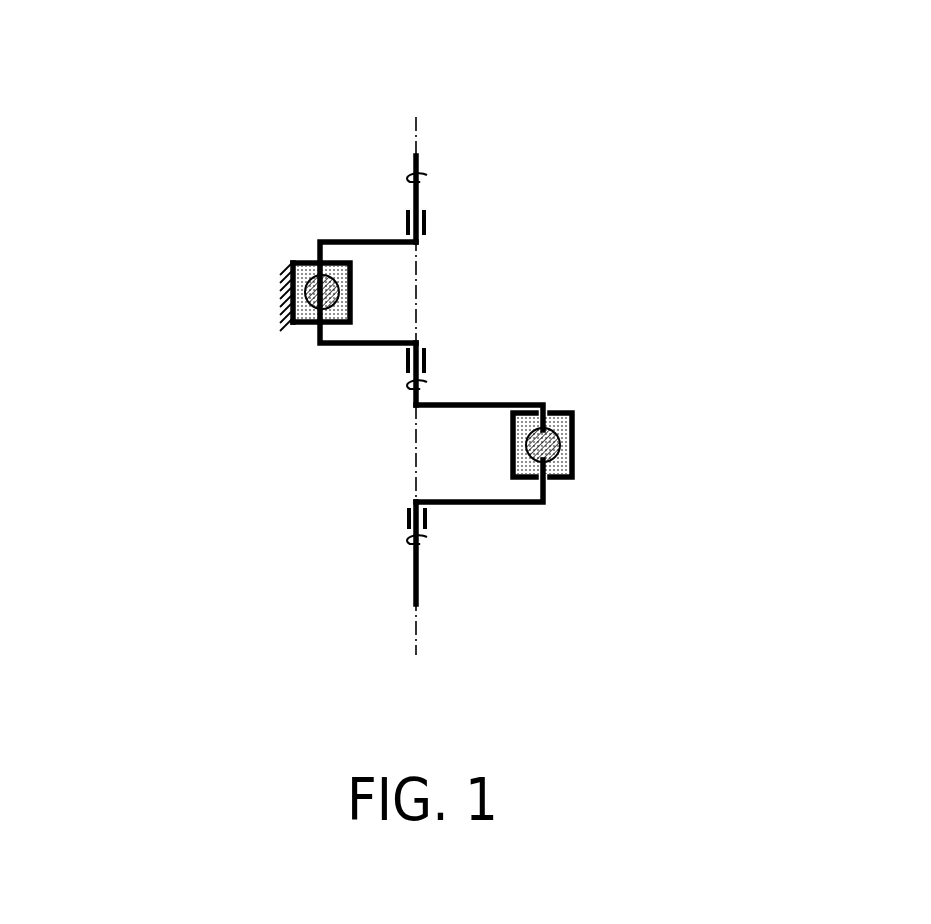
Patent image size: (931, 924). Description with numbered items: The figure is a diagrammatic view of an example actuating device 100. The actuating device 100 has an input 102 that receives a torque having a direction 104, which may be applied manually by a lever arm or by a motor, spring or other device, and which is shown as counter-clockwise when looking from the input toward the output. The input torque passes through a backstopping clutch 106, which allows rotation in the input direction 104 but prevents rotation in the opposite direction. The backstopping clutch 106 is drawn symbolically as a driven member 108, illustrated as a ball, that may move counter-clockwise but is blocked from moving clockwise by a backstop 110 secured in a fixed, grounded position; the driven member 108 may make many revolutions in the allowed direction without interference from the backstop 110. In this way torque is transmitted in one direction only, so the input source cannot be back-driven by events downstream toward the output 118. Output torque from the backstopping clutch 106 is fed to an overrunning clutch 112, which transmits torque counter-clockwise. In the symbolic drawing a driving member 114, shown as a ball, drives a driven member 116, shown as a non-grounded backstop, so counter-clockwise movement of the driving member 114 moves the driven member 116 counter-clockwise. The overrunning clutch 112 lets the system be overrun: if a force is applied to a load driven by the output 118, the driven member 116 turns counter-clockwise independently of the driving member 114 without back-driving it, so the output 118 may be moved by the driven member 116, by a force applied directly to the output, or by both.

The actuating device 100 is at (443, 343).
The input 102 is at (441, 130).
The direction 104 is at (287, 164).
The backstopping clutch 106 is at (586, 386).
The driven member 108 is at (201, 229).
The backstop 110 is at (212, 358).
The overrunning clutch 112 is at (497, 428).
The driving member 114 is at (618, 489).
The driven member 116 is at (372, 475).
The output 118 is at (391, 584).